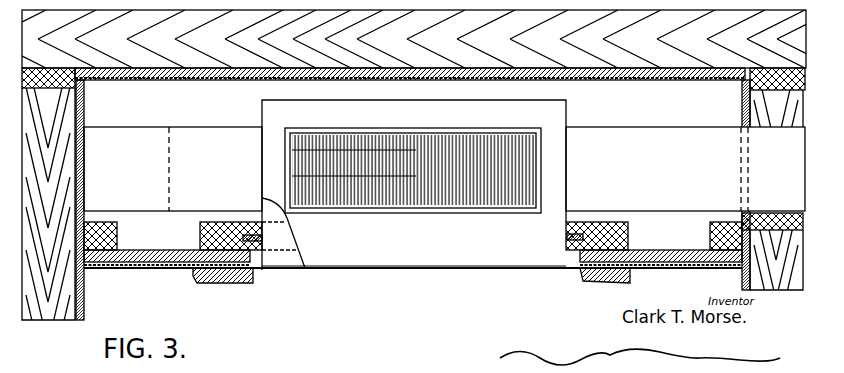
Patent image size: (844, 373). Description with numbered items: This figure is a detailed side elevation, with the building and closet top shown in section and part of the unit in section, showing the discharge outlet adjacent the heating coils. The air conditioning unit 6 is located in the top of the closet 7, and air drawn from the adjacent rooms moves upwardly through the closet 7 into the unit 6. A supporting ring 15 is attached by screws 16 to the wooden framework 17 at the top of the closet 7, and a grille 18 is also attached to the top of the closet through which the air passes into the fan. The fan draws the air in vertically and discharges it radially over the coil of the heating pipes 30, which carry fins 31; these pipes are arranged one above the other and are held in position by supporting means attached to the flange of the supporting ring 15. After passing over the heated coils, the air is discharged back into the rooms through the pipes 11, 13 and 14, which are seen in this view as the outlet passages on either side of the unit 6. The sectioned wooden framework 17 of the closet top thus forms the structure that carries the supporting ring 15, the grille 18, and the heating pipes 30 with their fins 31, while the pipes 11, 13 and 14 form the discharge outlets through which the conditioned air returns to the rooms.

The air conditioning unit 6 is at (350, 255).
The closet 7 is at (193, 282).
The pipe 11 is at (657, 138).
The pipe 13 is at (197, 143).
The pipe 14 is at (475, 131).
The supporting ring 15 is at (287, 238).
The screws 16 is at (265, 241).
The wooden framework 17 is at (232, 222).
The grille 18 is at (466, 268).
The heating pipes 30 is at (316, 131).
The fins 31 is at (366, 116).